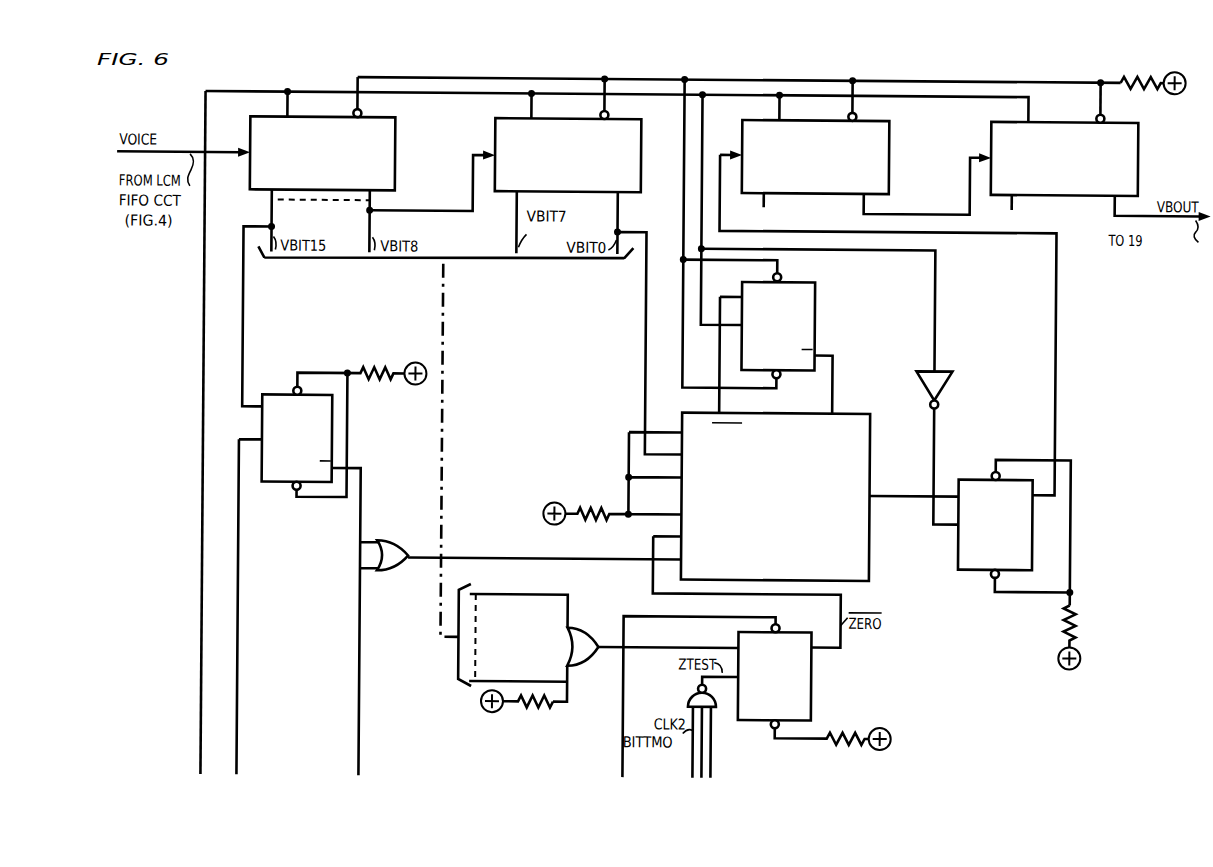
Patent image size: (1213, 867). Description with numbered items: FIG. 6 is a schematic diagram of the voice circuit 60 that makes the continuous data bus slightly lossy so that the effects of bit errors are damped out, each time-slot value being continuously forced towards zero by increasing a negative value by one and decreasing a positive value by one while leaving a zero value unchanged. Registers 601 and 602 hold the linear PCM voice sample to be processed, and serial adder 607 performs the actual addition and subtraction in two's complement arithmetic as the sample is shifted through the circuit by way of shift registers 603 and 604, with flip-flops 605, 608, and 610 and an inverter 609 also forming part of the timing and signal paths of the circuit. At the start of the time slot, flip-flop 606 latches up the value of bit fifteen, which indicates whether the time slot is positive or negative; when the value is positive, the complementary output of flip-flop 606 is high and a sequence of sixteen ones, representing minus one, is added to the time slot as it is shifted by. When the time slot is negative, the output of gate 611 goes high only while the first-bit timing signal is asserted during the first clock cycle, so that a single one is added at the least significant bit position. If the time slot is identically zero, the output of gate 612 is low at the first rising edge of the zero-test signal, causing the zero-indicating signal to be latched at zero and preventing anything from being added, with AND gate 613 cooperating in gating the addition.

The voice circuit 60 is at (692, 413).
The register 601 is at (386, 107).
The register 602 is at (633, 107).
The shift register 603 is at (879, 107).
The shift register 604 is at (1127, 107).
The flip-flop 605 is at (816, 294).
The flip-flop 606 is at (274, 395).
The serial adder 607 is at (848, 412).
The flip-flop 608 is at (973, 475).
The inverter 609 is at (946, 388).
The flip-flop 610 is at (815, 686).
The gate 611 is at (380, 539).
The gate 612 is at (582, 637).
The AND gate 613 is at (696, 689).